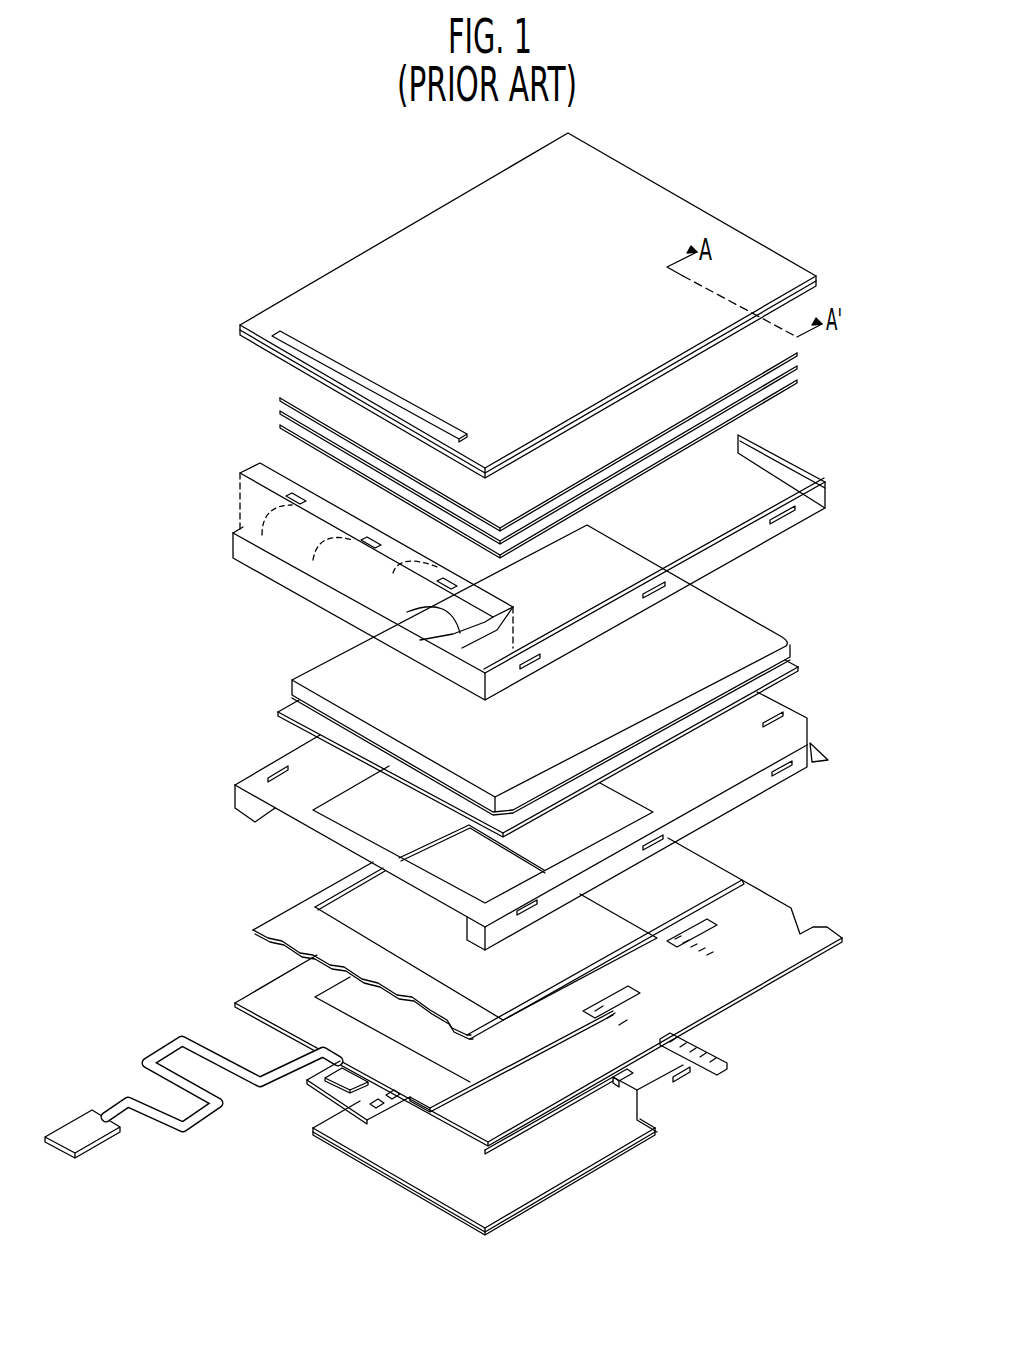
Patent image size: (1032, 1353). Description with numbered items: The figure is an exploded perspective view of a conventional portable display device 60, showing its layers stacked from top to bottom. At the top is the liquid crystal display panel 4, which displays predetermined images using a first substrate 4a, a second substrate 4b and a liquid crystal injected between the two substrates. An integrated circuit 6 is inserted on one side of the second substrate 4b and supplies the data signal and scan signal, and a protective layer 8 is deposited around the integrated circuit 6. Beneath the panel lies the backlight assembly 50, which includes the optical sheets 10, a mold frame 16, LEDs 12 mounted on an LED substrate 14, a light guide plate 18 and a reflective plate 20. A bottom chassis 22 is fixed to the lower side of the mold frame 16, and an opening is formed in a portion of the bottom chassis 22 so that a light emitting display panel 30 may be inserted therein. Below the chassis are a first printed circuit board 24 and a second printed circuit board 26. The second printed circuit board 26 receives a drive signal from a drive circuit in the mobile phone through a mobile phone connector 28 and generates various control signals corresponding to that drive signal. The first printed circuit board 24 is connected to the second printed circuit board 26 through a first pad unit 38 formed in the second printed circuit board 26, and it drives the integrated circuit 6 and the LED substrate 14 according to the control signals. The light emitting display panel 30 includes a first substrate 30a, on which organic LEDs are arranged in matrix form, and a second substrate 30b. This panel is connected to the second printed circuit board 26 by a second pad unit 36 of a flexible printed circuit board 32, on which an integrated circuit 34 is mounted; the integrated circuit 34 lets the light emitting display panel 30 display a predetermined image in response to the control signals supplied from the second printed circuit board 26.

The portable display device 60 is at (244, 144).
The liquid crystal display panel 4 is at (537, 305).
The first substrate 4a is at (813, 276).
The second substrate 4b is at (818, 285).
The integrated circuit 6 is at (282, 332).
The protective layer 8 is at (255, 323).
The optical sheets 10 is at (273, 397).
The LEDs 12 is at (400, 573).
The LED substrate 14 is at (407, 612).
The mold frame 16 is at (778, 452).
The light guide plate 18 is at (308, 673).
The reflective plate 20 is at (280, 710).
The bottom chassis 22 is at (805, 718).
The first printed circuit board 24 is at (266, 924).
The second printed circuit board 26 is at (512, 1010).
The mobile phone connector 28 is at (95, 1132).
The light emitting display panel 30 is at (540, 1123).
The first substrate 30a is at (556, 1088).
The second substrate 30b is at (613, 1163).
The flexible printed circuit board 32 is at (673, 1077).
The integrated circuit 34 is at (647, 1080).
The second pad unit 36 is at (730, 1055).
The first pad unit 38 is at (707, 943).
The backlight assembly 50 is at (853, 347).